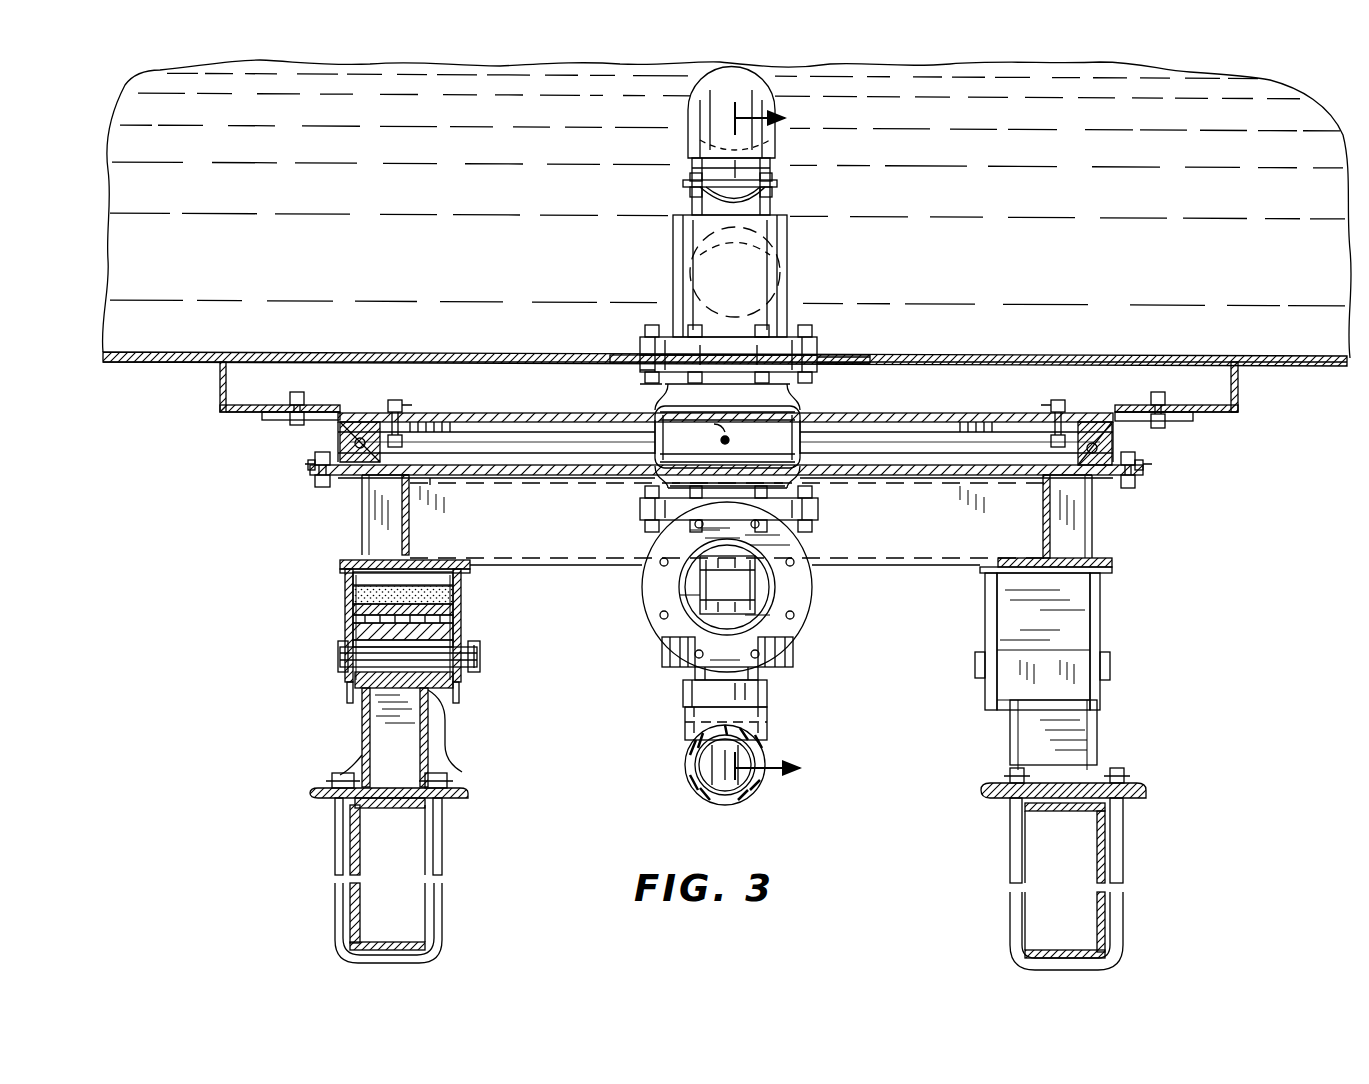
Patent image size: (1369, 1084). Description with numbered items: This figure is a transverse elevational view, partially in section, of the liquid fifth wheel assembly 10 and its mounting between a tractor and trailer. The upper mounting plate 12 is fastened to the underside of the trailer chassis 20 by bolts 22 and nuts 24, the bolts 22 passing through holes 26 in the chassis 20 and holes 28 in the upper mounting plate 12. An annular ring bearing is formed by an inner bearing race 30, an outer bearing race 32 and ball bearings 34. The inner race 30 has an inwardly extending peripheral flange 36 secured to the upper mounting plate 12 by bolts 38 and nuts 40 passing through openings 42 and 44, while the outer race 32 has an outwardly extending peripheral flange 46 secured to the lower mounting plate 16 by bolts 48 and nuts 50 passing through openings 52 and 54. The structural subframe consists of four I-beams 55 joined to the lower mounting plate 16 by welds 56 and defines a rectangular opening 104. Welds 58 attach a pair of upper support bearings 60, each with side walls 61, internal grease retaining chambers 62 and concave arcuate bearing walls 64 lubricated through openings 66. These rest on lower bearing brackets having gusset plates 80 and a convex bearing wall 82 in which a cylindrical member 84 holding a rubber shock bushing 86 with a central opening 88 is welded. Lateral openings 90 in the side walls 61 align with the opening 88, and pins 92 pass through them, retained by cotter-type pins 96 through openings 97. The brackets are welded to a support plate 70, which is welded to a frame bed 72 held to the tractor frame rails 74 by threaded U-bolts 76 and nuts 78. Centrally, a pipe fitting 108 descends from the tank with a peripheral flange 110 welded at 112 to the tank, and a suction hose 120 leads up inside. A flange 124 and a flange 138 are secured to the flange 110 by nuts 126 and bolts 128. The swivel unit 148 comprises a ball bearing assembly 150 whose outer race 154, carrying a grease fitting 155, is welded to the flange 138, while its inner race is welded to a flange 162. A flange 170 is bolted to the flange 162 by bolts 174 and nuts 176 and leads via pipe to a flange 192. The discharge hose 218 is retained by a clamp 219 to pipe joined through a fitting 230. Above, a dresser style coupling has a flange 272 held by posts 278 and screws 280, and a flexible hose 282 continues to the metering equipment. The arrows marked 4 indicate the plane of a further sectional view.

The section line 4- 4 is at (779, 443).
The liquid fifth wheel assembly 10 is at (865, 772).
The upper mounting plate 12 is at (520, 412).
The lower mounting plate 16 is at (540, 480).
The trailer chassis 20 is at (236, 412).
The bolts 22 is at (290, 394).
The nuts 24 is at (290, 418).
The holes 26 is at (312, 360).
The holes 28 is at (270, 420).
The inner bearing race 30 is at (352, 420).
The outer bearing race 32 is at (352, 480).
The ball bearings 34 is at (366, 505).
The inwardly extending peripheral flange 36 is at (1045, 430).
The bolts 38 is at (405, 415).
The nuts 40 is at (398, 480).
The openings 42 is at (393, 400).
The openings 44 is at (410, 412).
The outwardly extending peripheral flange 46 is at (354, 443).
The bolts 48 is at (318, 455).
The nuts 50 is at (322, 488).
The openings 52 is at (310, 468).
The openings 54 is at (306, 470).
The I-beams 55 is at (395, 490).
The welds 56 is at (1110, 535).
The welds 58 is at (340, 562).
The upper support bearings 60 is at (338, 590).
The side walls 61 is at (340, 571).
The internal grease retaining chambers 62 is at (453, 595).
The concave arcuate bearing walls 64 is at (453, 608).
The openings 66 is at (352, 628).
The support plate 70 is at (462, 799).
The frame bed 72 is at (352, 802).
The frame rails 74 is at (350, 840).
The threaded U-bolts 76 is at (442, 858).
The nuts 78 is at (332, 778).
The gusset plates 80 is at (362, 722).
The arcuate convex bearing wall 82 is at (421, 613).
The cylindrical member 84 is at (453, 632).
The cylindrical shock bushing 86 is at (448, 646).
The central opening 88 is at (446, 700).
The lateral openings 90 is at (347, 682).
The pins 92 is at (340, 656).
The cotter-type pins 96 is at (480, 655).
The openings 97 is at (476, 668).
The rectangular opening 104 is at (595, 555).
The pipe fitting 108 is at (788, 246).
The external peripheral flange 110 is at (838, 354).
The weld 112 is at (860, 358).
The suction hose 120 is at (690, 238).
The flange 124 is at (640, 348).
The nuts 126 is at (812, 378).
The bolts 128 is at (645, 330).
The flange 138 is at (640, 372).
The swivel unit 148 is at (650, 408).
The ball bearing assembly 150 is at (652, 440).
The outer race 154 is at (800, 446).
The grease fitting 155 is at (709, 429).
The flange 162 is at (640, 508).
The flange 170 is at (648, 530).
The bolts 174 is at (812, 498).
The nuts 176 is at (812, 528).
The flange 192 is at (650, 598).
The hose 218 is at (686, 765).
The clamp 219 is at (683, 705).
The fitting 230 is at (735, 616).
The flange 272 is at (690, 191).
The posts 278 is at (778, 193).
The screws 280 is at (690, 178).
The flexible hose 282 is at (778, 140).